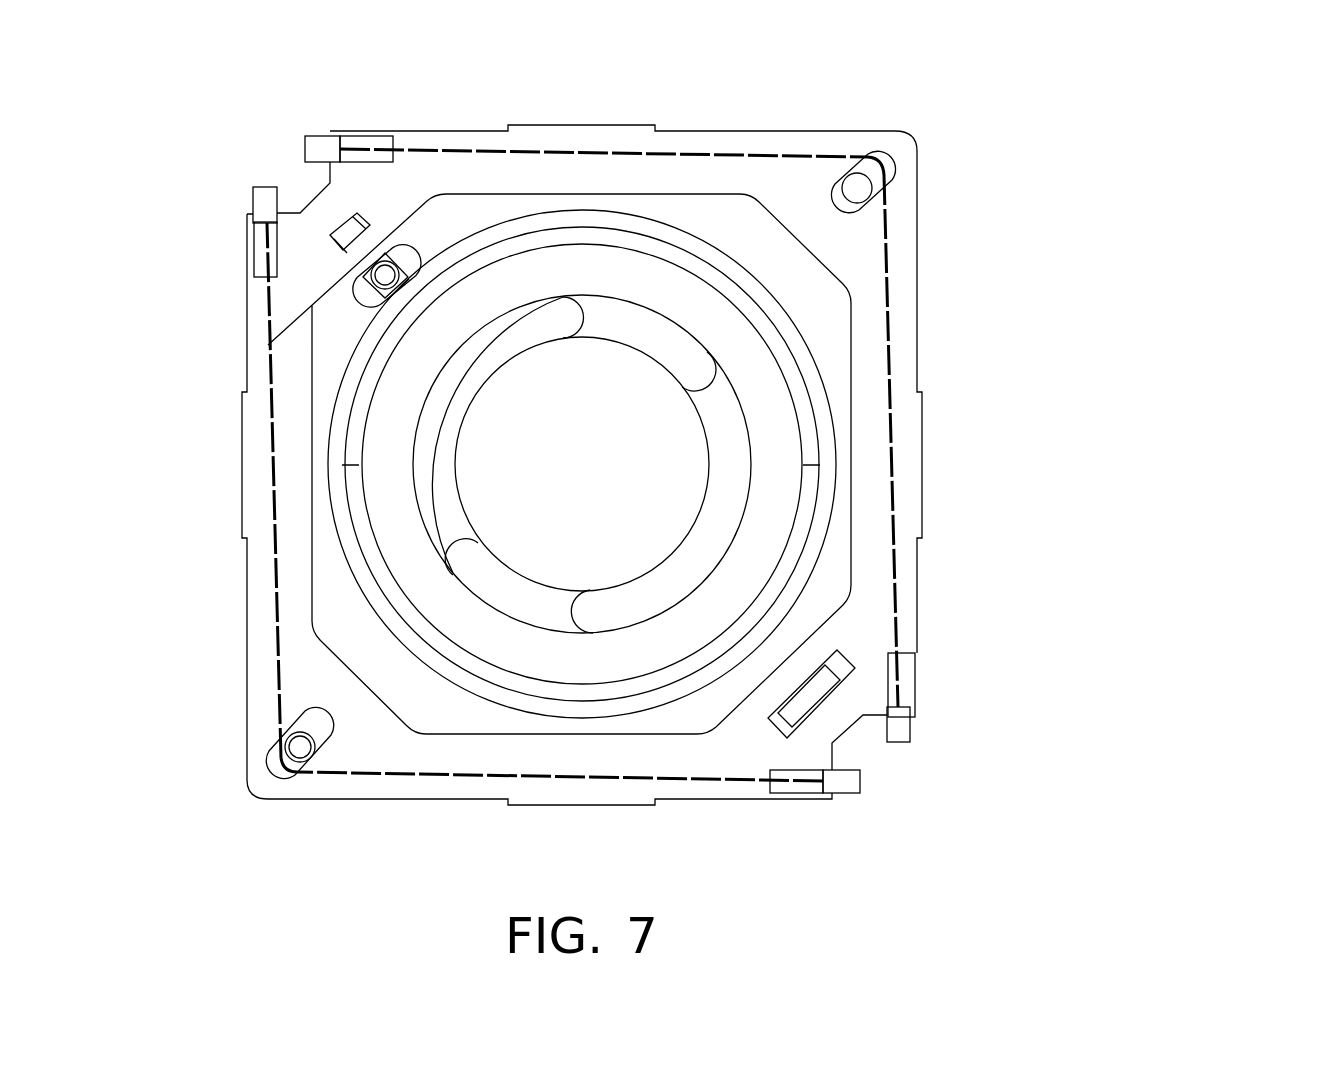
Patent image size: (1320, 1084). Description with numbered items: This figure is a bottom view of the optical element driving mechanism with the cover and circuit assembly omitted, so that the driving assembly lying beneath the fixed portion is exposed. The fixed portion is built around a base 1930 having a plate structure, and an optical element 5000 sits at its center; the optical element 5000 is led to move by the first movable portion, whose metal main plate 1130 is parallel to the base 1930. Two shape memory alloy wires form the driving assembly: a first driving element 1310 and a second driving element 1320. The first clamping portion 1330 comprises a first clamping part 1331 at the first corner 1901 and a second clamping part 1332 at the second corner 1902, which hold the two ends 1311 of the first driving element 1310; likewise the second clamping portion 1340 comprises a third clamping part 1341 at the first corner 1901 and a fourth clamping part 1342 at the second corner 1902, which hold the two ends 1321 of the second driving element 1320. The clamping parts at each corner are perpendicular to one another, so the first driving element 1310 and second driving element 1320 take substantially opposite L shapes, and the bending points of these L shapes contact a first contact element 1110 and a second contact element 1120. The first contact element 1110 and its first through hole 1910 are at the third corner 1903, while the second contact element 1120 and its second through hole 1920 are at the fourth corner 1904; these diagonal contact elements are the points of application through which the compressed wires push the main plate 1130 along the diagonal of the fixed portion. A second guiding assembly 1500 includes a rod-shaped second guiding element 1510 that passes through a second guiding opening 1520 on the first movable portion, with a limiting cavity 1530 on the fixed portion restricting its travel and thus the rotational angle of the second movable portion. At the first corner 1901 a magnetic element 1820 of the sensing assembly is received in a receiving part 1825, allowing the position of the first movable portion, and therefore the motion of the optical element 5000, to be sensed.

The first driving element 1310 is at (268, 481).
The two ends of the first driving element 1311 is at (262, 250).
The second driving element 1320 is at (606, 150).
The two ends of the second driving element 1321 is at (363, 147).
The first clamping portion 1330 is at (1200, 58).
The first clamping part 1331 is at (843, 792).
The second clamping part 1332 is at (262, 204).
The second clamping portion 1340 is at (1200, 132).
The third clamping part 1341 is at (900, 733).
The fourth clamping part 1342 is at (318, 142).
The second guiding assembly 1500 is at (1200, 207).
The second guiding element 1510 is at (287, 157).
The second guiding opening 1520 is at (362, 277).
The limiting cavity 1530 is at (418, 262).
The first corner 1901 is at (908, 604).
The second corner 1902 is at (252, 304).
The third corner 1903 is at (292, 782).
The fourth corner 1904 is at (879, 153).
The first through hole 1910 is at (288, 752).
The second through hole 1920 is at (877, 197).
The base 1930 is at (577, 778).
The first contact element 1110 is at (280, 756).
The second contact element 1120 is at (873, 193).
The main plate 1130 is at (310, 727).
The magnetic element 1820 is at (808, 698).
The receiving part 1825 is at (838, 669).
The optical element 5000 is at (425, 436).